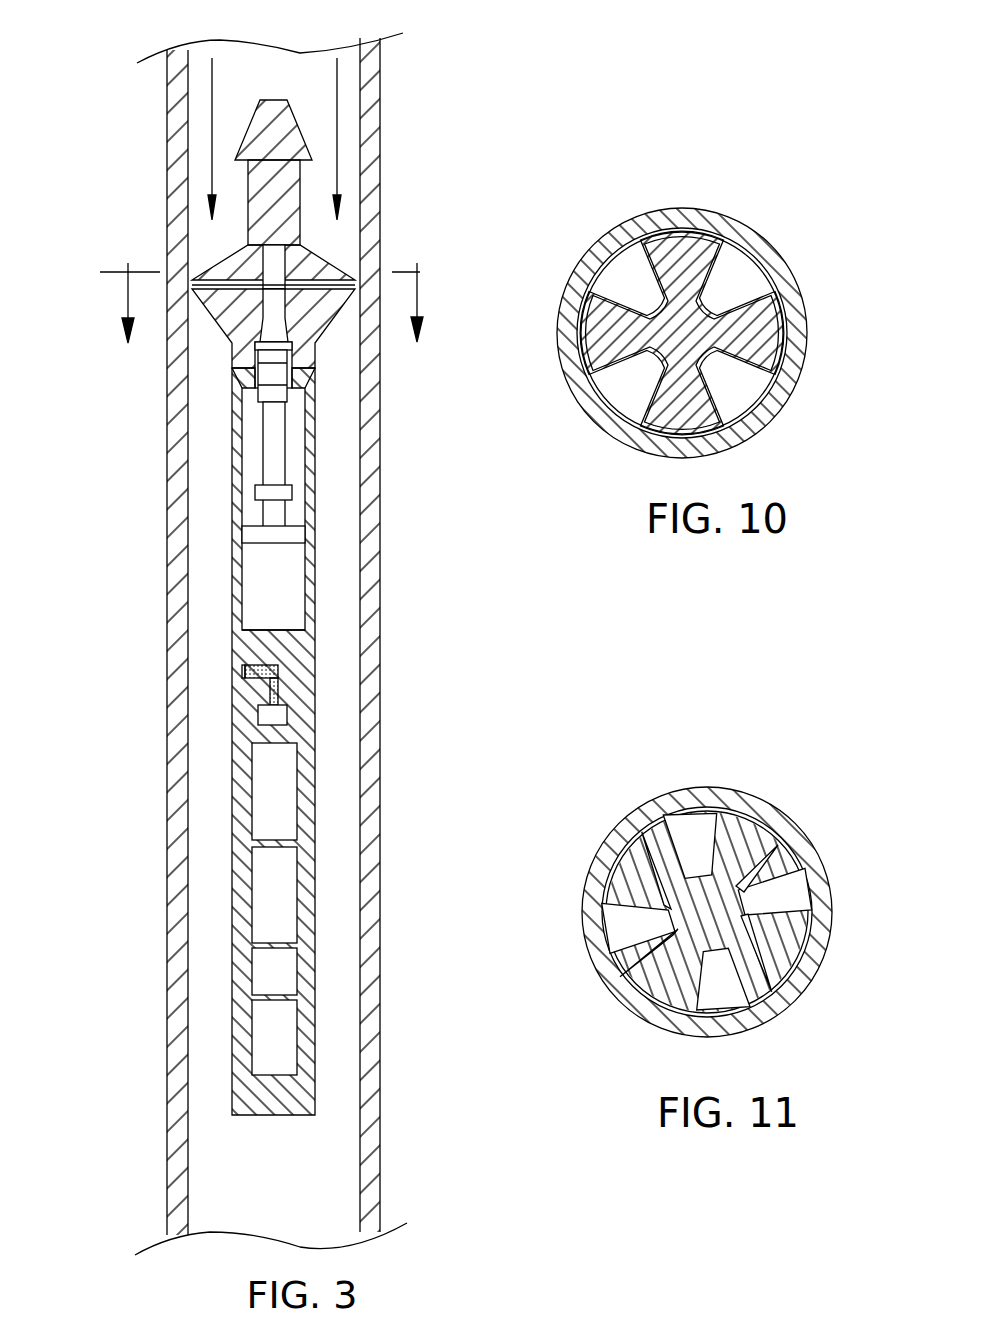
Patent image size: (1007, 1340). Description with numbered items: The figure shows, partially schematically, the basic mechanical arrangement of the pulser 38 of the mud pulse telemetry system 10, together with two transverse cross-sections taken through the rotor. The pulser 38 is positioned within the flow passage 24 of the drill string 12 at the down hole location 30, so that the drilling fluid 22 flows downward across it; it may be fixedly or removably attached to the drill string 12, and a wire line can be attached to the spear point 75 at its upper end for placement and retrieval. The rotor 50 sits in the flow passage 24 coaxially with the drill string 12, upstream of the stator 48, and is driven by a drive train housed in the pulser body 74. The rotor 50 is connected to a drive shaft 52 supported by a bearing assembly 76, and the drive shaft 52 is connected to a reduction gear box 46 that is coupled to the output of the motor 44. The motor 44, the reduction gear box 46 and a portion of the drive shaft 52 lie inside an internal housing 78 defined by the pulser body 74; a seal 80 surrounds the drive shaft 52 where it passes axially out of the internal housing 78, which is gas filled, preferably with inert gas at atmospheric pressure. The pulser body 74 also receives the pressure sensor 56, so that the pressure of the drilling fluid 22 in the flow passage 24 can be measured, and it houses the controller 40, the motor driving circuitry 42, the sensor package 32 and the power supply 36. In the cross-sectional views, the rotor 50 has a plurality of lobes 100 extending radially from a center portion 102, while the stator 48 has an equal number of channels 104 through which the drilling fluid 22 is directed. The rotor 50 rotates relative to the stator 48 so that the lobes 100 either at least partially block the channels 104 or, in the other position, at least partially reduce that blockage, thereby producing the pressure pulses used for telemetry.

In FIG. 3, the mud pulse telemetry system 10 is at (112, 301).
In FIG. 3, the drill string 12 is at (172, 190).
In FIG. 10, the drill string 12 is at (565, 365).
In FIG. 11, the drill string 12 is at (602, 852).
In FIG. 3, the drilling fluid 22 is at (337, 108).
In FIG. 3, the flow passage 24 is at (207, 242).
In FIG. 3, the down hole location 30 is at (150, 673).
In FIG. 3, the sensor package 32 is at (258, 1040).
In FIG. 3, the power supply 36 is at (278, 970).
In FIG. 3, the pulser 38 is at (315, 672).
In FIG. 3, the controller 40 is at (258, 878).
In FIG. 3, the motor driving circuitry 42 is at (287, 782).
In FIG. 3, the motor 44 is at (252, 565).
In FIG. 3, the reduction gear box 46 is at (293, 537).
In FIG. 3, the stator 48 is at (217, 310).
In FIG. 10, the stator 48 is at (689, 359).
In FIG. 11, the stator 48 is at (615, 918).
In FIG. 3, the rotor 50 is at (325, 265).
In FIG. 10, the rotor 50 is at (722, 333).
In FIG. 11, the rotor 50 is at (808, 907).
In FIG. 3, the drive shaft 52 is at (272, 448).
In FIG. 3, the drilling fluid pressure sensor 56 is at (235, 705).
In FIG. 3, the pulser body 74 is at (237, 492).
In FIG. 3, the spear point 75 is at (270, 108).
In FIG. 3, the bearing assembly 76 is at (287, 492).
In FIG. 3, the internal housing 78 is at (293, 450).
In FIG. 3, the seal 80 is at (287, 373).
In FIG. 10, the lobes 100 is at (677, 243).
In FIG. 11, the lobes 100 is at (750, 832).
In FIG. 10, the center portion 102 is at (702, 315).
In FIG. 10, the channels 104 is at (618, 270).
In FIG. 11, the channels 104 is at (654, 827).